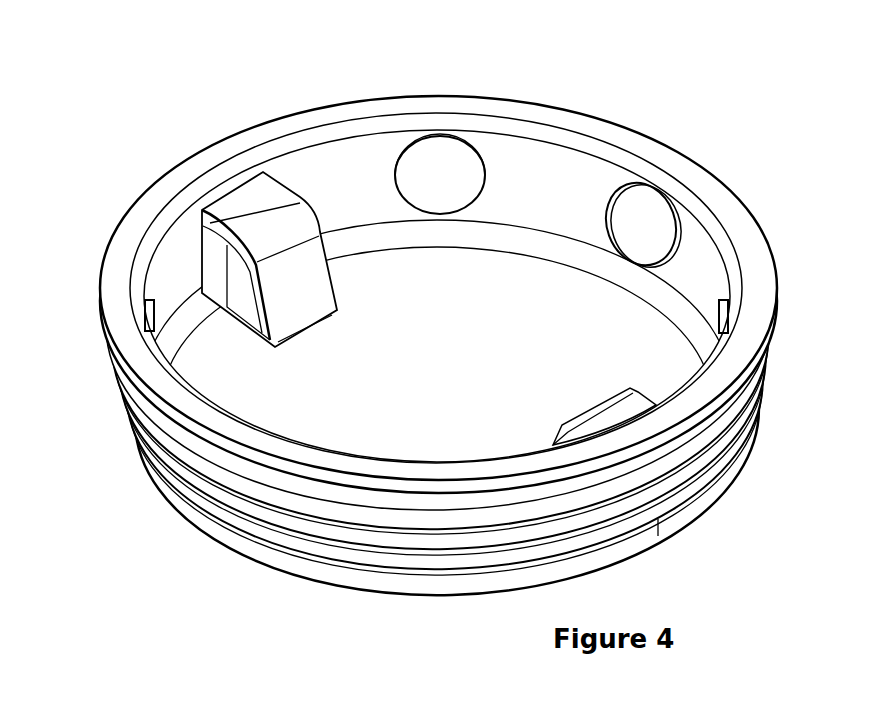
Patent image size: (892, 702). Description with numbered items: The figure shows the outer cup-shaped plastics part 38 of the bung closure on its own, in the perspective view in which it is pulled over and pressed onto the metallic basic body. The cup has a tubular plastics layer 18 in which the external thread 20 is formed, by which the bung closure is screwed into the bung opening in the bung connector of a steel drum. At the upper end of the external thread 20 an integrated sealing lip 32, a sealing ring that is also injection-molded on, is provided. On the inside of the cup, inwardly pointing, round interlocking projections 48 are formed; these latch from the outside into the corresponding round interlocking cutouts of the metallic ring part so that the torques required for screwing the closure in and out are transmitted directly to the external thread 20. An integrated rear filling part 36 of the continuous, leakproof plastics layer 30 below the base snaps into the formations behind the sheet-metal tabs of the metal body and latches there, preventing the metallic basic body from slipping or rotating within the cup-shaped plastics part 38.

The tubular plastics layer 18 is at (163, 280).
The external thread 20 is at (203, 487).
The continuous, leakproof plastics layer 30 is at (503, 287).
The integrated sealing lip 32 is at (120, 303).
The integrated rear filling part 36 is at (233, 277).
The cup-shaped plastics part 38 is at (443, 387).
The inwardly pointing, round interlocking projections 48 is at (413, 173).